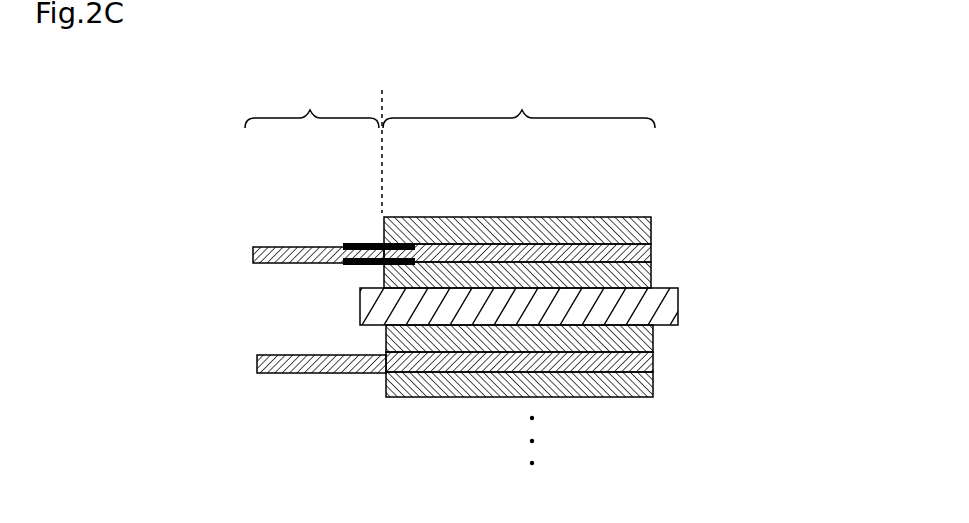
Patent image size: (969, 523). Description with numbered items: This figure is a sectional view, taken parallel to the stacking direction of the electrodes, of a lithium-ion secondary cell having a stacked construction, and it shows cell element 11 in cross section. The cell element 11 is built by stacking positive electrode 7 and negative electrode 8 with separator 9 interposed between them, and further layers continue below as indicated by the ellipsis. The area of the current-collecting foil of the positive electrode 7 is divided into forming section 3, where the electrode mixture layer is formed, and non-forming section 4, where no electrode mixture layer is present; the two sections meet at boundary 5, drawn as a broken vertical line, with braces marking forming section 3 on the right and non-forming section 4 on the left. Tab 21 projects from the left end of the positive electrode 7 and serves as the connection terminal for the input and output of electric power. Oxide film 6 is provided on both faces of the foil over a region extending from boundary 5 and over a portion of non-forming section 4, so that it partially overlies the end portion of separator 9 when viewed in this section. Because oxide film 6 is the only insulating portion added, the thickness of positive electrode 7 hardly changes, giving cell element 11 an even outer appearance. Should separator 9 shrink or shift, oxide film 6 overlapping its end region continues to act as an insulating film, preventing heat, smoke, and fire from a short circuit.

The cell element 11 is at (514, 243).
The positive electrode 7 is at (493, 249).
The negative electrode 8 is at (682, 377).
The separator 9 is at (670, 312).
The tab 21 is at (277, 247).
The oxide film 6 is at (377, 243).
The boundary 5 is at (382, 112).
The non-forming section 4 is at (312, 106).
The forming section 3 is at (519, 106).